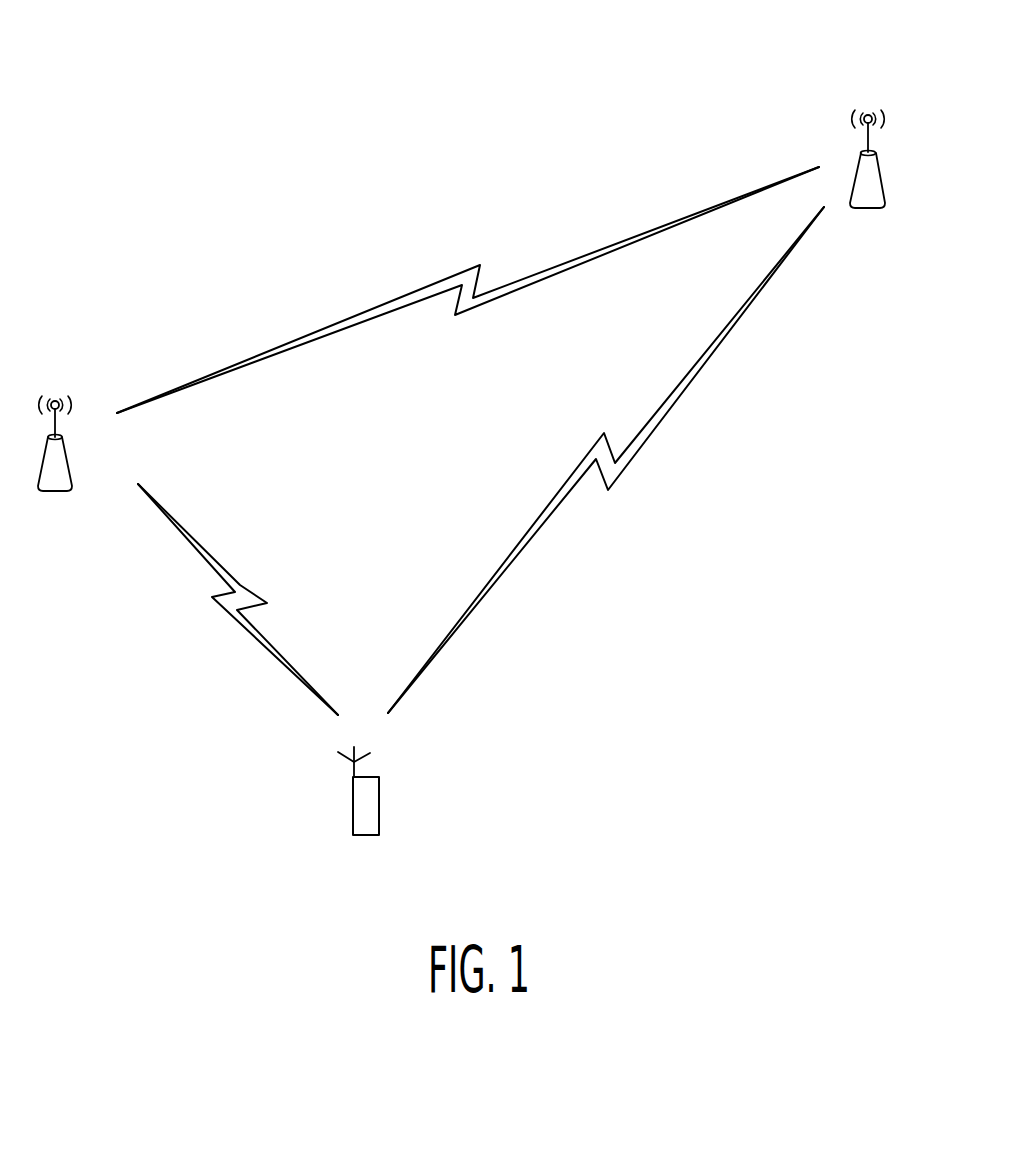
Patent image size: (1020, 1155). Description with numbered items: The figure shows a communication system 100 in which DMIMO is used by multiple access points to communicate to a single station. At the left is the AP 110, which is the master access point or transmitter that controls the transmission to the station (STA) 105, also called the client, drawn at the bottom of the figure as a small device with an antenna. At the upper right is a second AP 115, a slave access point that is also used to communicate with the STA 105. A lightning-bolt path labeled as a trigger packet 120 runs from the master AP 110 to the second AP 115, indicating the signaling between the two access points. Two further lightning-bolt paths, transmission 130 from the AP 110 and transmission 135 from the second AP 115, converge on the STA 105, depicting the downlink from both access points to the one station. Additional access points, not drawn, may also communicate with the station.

The wireless communication system 100 is at (200, 91).
The station 105 is at (380, 802).
The AP 110 is at (55, 393).
The second AP 115 is at (868, 110).
The trigger packet transmission 120 is at (294, 338).
The transmission from first access point to station 130 is at (213, 599).
The transmission from second access point to station 135 is at (645, 442).